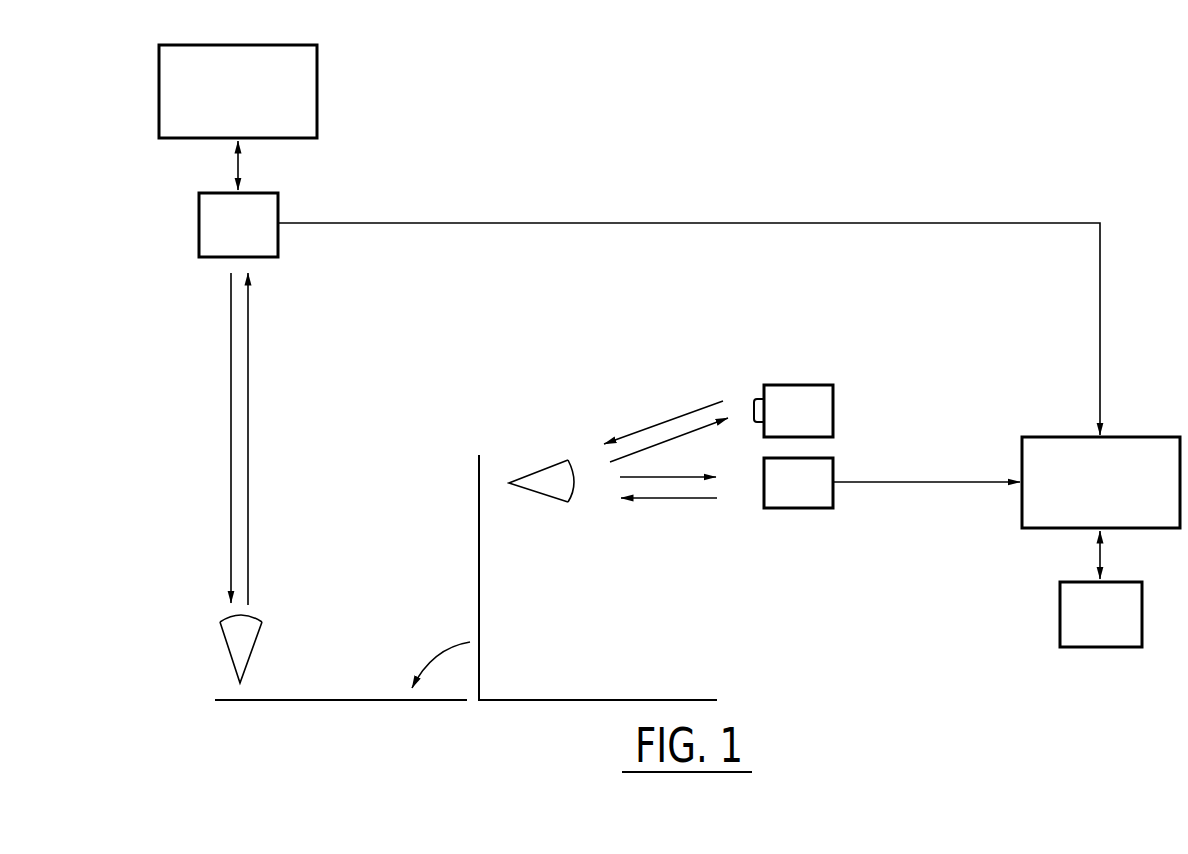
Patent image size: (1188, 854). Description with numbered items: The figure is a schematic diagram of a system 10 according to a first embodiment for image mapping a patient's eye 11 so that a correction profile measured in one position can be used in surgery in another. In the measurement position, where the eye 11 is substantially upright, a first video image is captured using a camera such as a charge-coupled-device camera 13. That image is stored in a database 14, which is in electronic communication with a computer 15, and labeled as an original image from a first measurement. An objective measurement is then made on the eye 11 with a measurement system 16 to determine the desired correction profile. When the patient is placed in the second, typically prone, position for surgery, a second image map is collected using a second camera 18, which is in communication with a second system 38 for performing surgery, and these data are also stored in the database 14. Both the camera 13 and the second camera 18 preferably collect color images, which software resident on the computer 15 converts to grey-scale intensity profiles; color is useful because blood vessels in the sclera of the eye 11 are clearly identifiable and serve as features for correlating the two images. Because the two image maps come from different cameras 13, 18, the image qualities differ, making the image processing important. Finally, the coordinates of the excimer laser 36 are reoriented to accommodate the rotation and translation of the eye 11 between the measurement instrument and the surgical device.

The system 10 is at (897, 128).
The patient's eye 11 is at (245, 645).
The charge-coupled-device camera 13 is at (795, 498).
The database 14 is at (1084, 629).
The computer 15 is at (1084, 498).
The measurement system 16 is at (810, 393).
The second camera 18 is at (226, 241).
The excimer laser 36 is at (760, 397).
The second system for performing surgery 38 is at (222, 109).